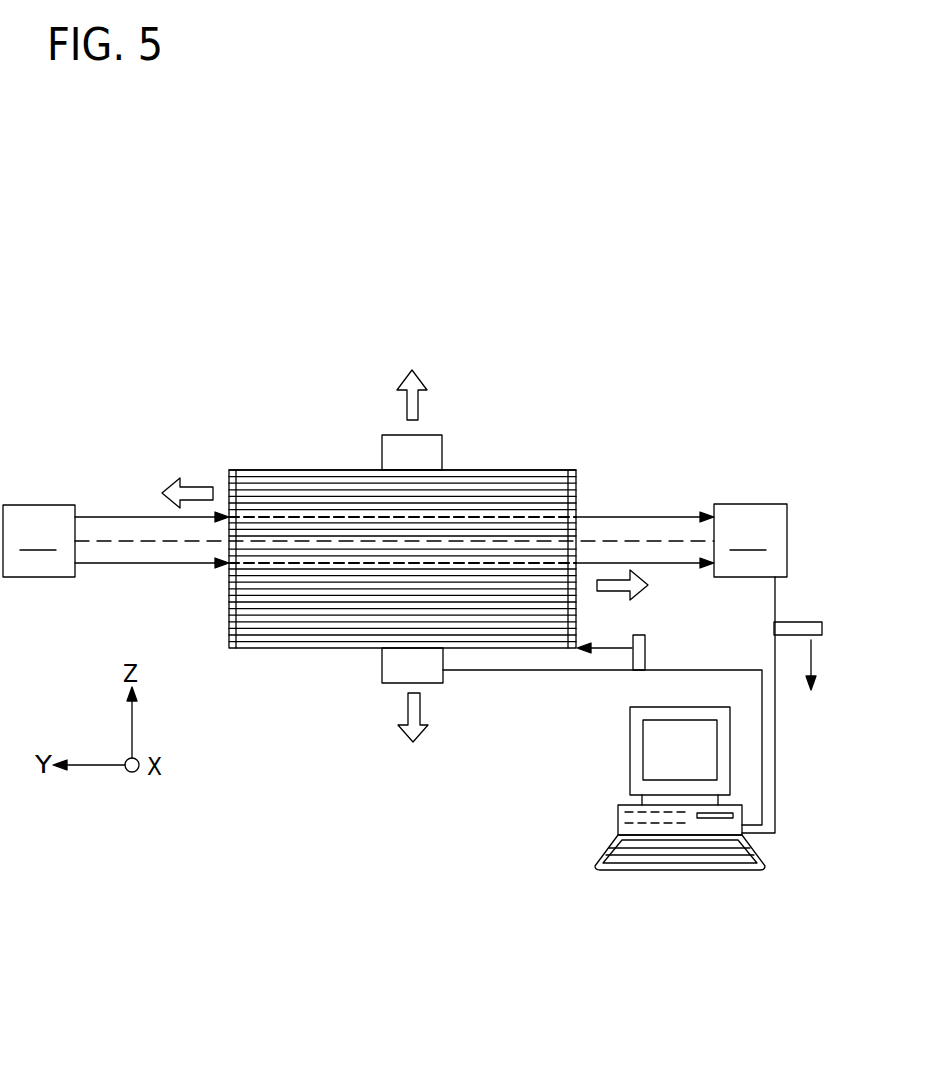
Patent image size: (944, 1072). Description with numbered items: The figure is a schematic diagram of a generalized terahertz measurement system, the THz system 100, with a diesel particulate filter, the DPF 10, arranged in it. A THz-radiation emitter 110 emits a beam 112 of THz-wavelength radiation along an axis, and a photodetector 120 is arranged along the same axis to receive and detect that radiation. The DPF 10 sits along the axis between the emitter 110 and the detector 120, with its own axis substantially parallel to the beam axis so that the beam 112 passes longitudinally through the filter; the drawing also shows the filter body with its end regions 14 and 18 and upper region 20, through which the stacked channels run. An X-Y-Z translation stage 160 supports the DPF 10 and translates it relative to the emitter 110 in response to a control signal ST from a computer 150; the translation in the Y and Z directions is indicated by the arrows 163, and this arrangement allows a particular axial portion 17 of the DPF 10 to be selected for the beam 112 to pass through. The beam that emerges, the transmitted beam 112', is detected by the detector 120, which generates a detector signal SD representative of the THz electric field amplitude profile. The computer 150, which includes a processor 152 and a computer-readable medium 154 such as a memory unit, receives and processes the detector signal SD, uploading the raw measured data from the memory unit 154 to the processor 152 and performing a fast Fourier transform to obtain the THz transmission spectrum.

The THz system 100 is at (622, 311).
The DPF 10 is at (464, 446).
The first end plate 14 is at (240, 470).
The top plate 20 is at (288, 470).
The axial portion 17 is at (492, 503).
The second end plate 18 is at (577, 470).
The THz-radiation emitter 110 is at (39, 541).
The beam 112 is at (394, 505).
The transmitted beam 112' is at (645, 492).
The photodetector 120 is at (750, 668).
The arrows 163 is at (203, 487).
The X-Y-Z translation stage 160 is at (382, 672).
The control signal ST is at (644, 650).
The detector signal SD is at (798, 622).
The computer 150 is at (624, 736).
The processor 152 is at (625, 816).
The computer-readable medium 154 is at (673, 825).